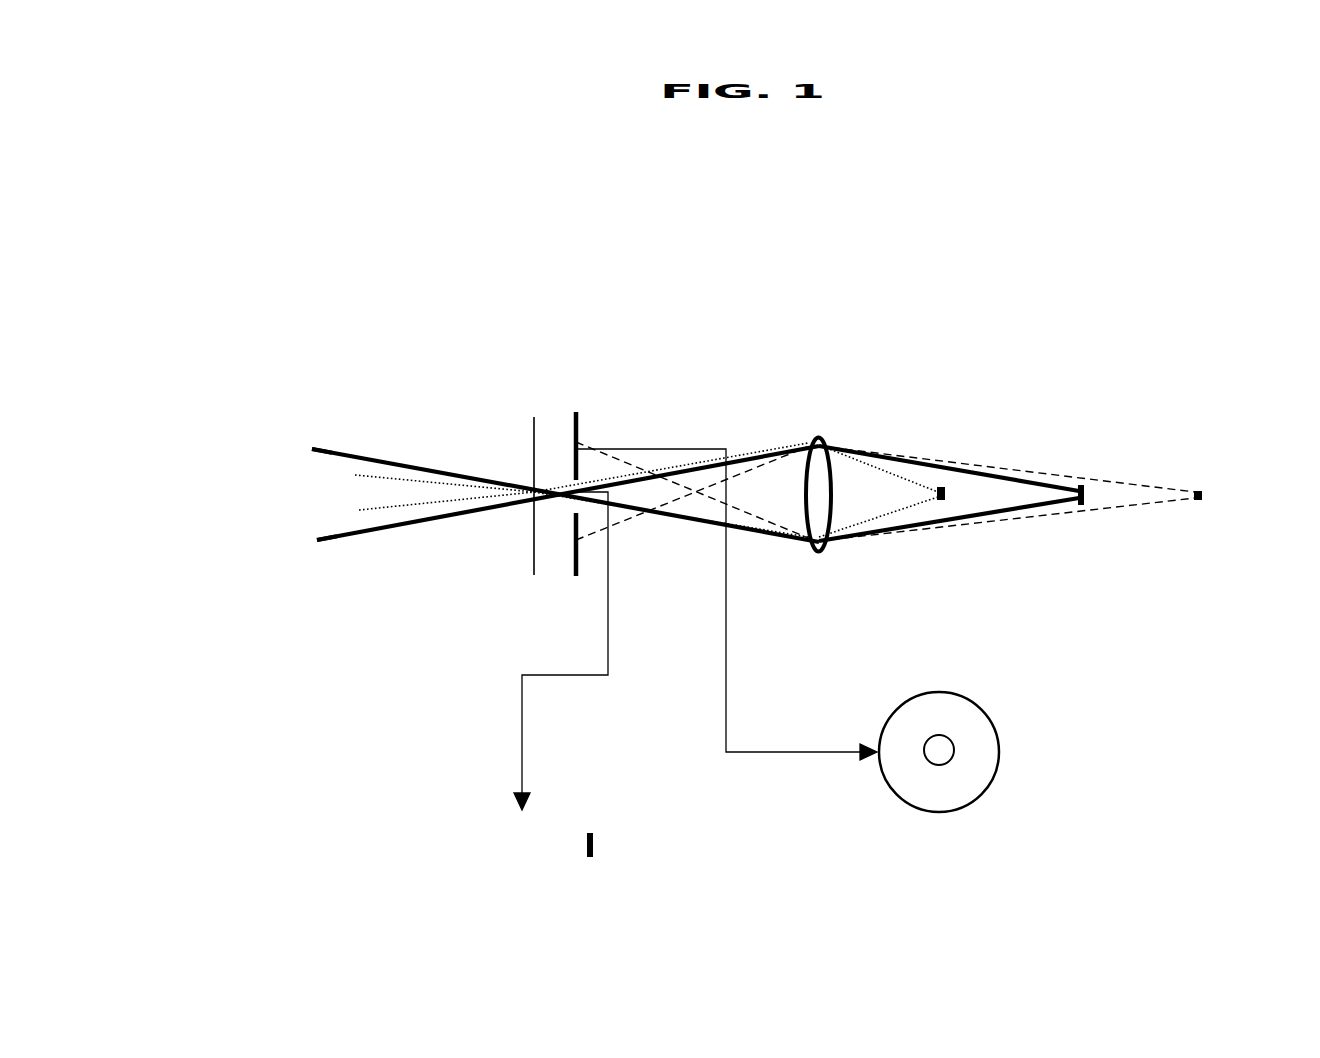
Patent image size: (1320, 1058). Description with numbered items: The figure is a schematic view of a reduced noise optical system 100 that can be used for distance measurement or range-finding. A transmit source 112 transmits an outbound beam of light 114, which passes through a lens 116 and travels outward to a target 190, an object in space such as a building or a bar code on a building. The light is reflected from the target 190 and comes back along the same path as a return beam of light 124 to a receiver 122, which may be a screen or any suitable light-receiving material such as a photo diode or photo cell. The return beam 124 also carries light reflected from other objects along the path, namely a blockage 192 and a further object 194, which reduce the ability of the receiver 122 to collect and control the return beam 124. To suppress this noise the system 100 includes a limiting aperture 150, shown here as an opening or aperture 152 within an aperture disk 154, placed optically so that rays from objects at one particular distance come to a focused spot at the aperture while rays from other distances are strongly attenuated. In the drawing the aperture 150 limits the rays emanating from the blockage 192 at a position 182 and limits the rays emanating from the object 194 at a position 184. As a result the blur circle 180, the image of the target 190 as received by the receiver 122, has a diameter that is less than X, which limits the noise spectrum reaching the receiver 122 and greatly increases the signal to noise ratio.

The reduced noise optical system 100 is at (258, 896).
The transmit source 112 is at (279, 500).
The outbound beam of light 114 is at (594, 577).
The lens 116 is at (818, 440).
The receiver 122 is at (534, 388).
The return beam of light 124 is at (894, 455).
The limiting aperture 150 is at (577, 430).
The aperture 152 is at (945, 746).
The aperture disk 154 is at (972, 773).
The blur circle 180 is at (567, 707).
The position 182 is at (576, 513).
The position 184 is at (576, 460).
The target 190 is at (1082, 485).
The blockage 192 is at (945, 488).
The object 194 is at (1198, 490).